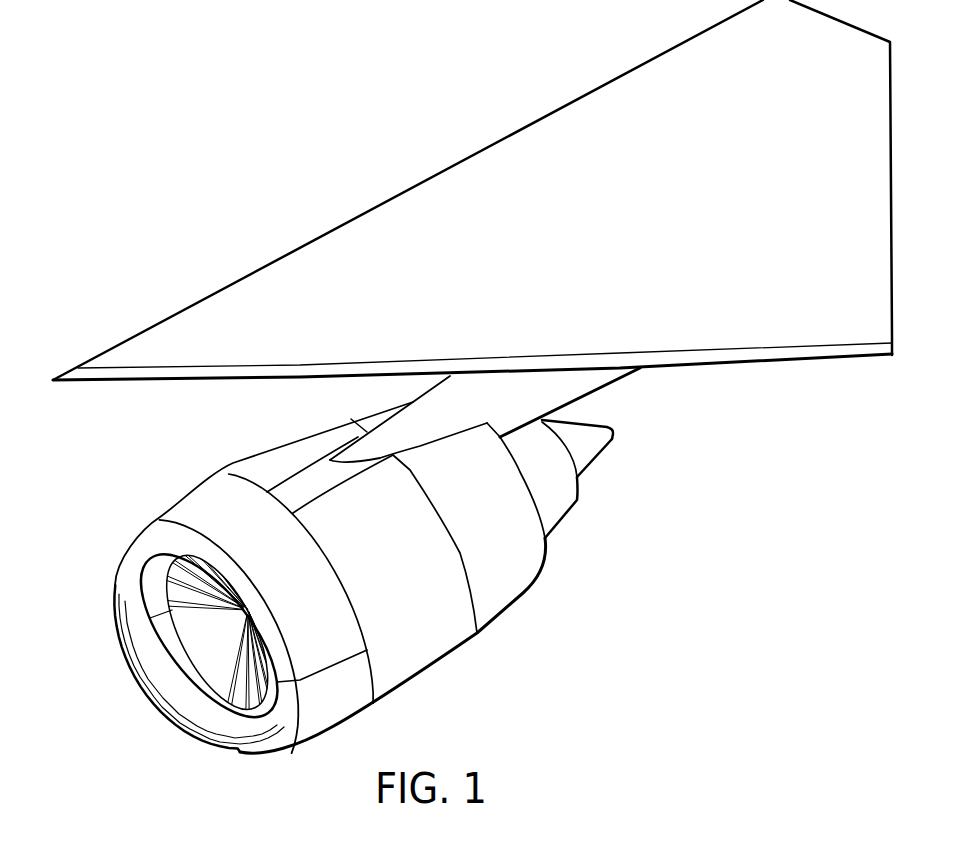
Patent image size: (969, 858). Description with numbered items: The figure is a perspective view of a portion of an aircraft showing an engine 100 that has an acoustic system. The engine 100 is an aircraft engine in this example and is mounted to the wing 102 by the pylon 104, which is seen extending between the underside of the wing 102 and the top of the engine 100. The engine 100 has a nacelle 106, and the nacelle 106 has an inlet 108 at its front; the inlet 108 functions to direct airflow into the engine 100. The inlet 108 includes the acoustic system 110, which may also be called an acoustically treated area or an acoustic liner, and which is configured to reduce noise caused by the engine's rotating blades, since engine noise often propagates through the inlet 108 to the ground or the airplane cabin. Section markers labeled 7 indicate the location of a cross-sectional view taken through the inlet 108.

The engine 100 is at (174, 454).
The wing 102 is at (447, 163).
The pylon 104 is at (580, 390).
The nacelle 106 is at (423, 652).
The inlet 108 is at (141, 634).
The acoustic system 110 is at (217, 744).
The section line 7- 7 is at (186, 797).